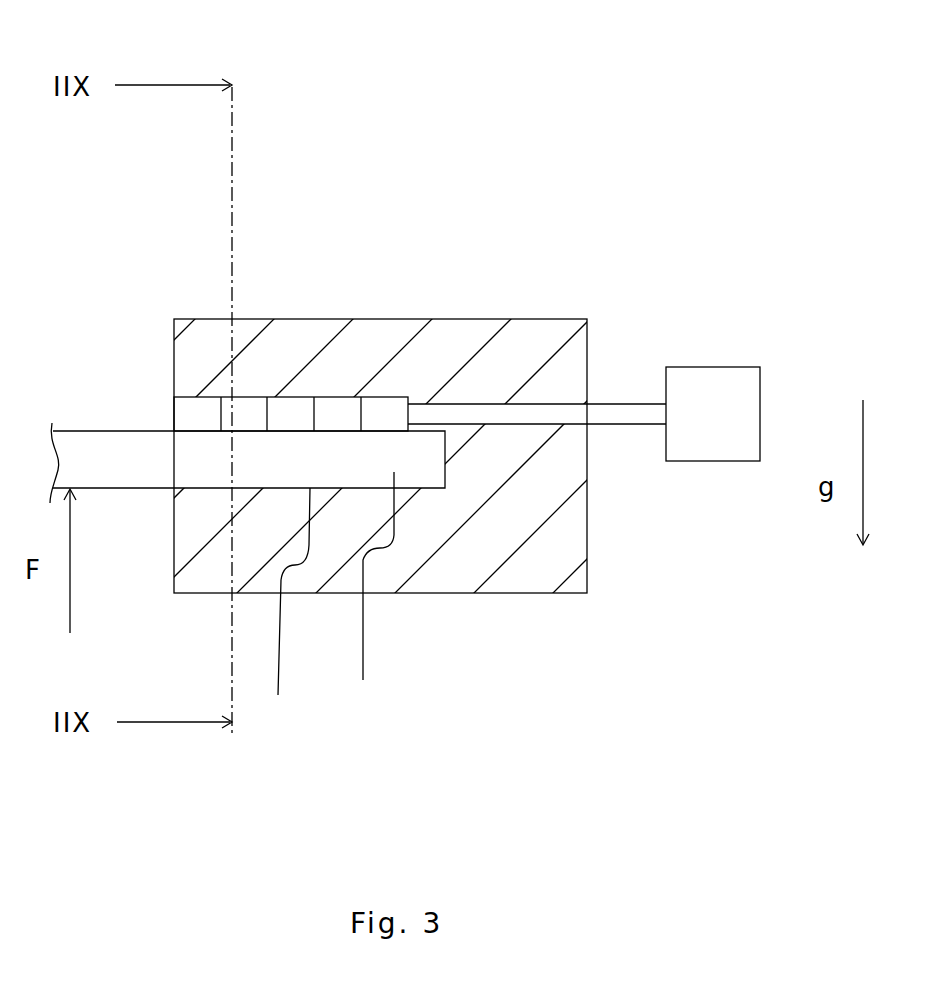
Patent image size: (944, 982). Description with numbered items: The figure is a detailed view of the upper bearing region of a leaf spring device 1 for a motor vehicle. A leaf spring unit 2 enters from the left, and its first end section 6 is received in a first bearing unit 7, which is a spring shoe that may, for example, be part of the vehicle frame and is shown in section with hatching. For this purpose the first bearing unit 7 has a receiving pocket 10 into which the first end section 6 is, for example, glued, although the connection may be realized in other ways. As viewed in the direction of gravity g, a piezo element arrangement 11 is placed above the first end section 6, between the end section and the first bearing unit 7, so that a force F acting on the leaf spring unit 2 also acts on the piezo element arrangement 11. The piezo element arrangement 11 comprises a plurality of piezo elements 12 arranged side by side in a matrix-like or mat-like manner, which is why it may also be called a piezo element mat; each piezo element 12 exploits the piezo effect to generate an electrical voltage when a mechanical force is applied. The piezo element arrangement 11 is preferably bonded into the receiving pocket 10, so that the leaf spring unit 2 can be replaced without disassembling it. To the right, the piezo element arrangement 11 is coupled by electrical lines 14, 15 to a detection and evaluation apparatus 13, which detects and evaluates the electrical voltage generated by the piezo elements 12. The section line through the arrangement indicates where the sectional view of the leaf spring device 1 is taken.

The leaf spring device 1 is at (326, 94).
The leaf spring unit 2 is at (70, 420).
The first end section 6 is at (374, 592).
The first bearing unit 7 is at (596, 557).
The receiving pocket 10 is at (286, 608).
The piezo element arrangement 11 is at (443, 229).
The piezo element 12 is at (191, 410).
The detection and evaluation apparatus 13 is at (732, 430).
The electrical line 14 is at (603, 424).
The electrical line 15 is at (648, 404).